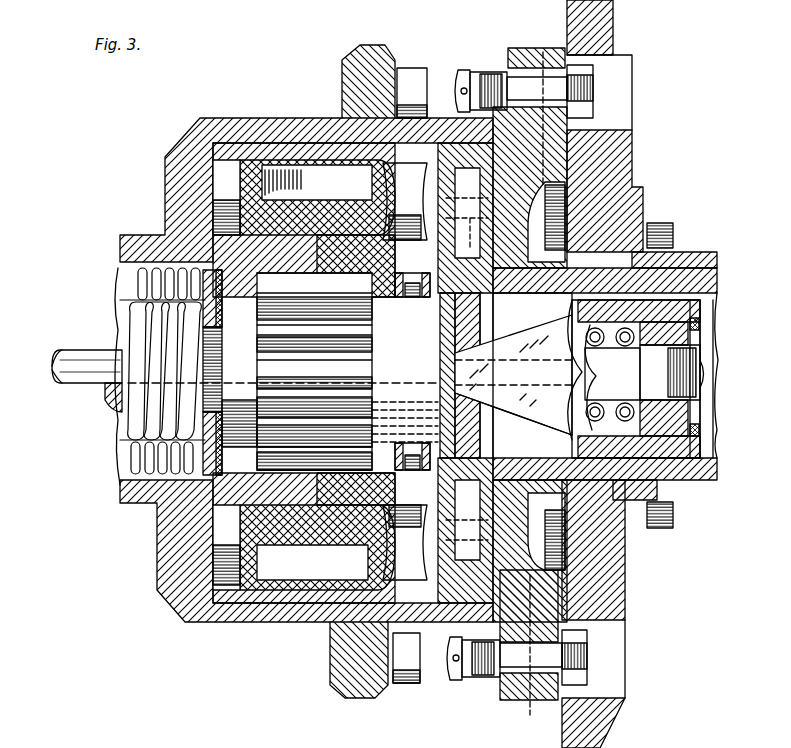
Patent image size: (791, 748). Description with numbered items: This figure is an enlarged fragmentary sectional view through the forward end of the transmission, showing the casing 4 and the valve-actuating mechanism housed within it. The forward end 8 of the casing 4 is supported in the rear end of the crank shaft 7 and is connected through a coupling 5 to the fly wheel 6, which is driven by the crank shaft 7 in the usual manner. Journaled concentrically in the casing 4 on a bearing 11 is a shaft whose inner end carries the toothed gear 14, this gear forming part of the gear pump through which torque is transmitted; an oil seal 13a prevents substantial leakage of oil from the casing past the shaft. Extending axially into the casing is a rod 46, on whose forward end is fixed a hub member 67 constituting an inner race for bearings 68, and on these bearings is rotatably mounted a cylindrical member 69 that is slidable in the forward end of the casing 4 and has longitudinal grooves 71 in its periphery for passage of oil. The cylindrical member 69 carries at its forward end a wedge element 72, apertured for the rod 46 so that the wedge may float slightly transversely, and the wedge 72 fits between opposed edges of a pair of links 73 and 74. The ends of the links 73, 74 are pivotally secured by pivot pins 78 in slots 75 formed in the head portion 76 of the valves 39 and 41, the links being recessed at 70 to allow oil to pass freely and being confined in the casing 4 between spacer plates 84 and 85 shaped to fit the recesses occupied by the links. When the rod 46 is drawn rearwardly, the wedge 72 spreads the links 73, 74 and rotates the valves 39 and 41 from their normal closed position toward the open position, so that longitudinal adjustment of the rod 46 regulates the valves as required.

The casing 4 is at (245, 128).
The coupling 5 is at (560, 48).
The fly wheel 6 is at (630, 146).
The crank shaft 7 is at (688, 254).
The forward end of the casing 8 is at (720, 290).
The bearing 11 is at (413, 455).
The oil seal 13a is at (134, 462).
The toothed gear 14 is at (366, 375).
The valve 39 is at (335, 228).
The valve 41 is at (322, 535).
The rod 46 is at (74, 385).
The hub member 67 is at (692, 386).
The bearings 68 is at (625, 345).
The cylindrical member 69 is at (702, 325).
The recess 70 is at (465, 342).
The longitudinal grooves 71 is at (600, 303).
The wedge element 72 is at (517, 345).
The link 73 is at (478, 462).
The link 74 is at (493, 241).
The slots 75 is at (430, 205).
The head portion 76 is at (452, 150).
The pivot pins 78 is at (467, 364).
The spacer plate 84 is at (532, 375).
The spacer plate 85 is at (445, 303).